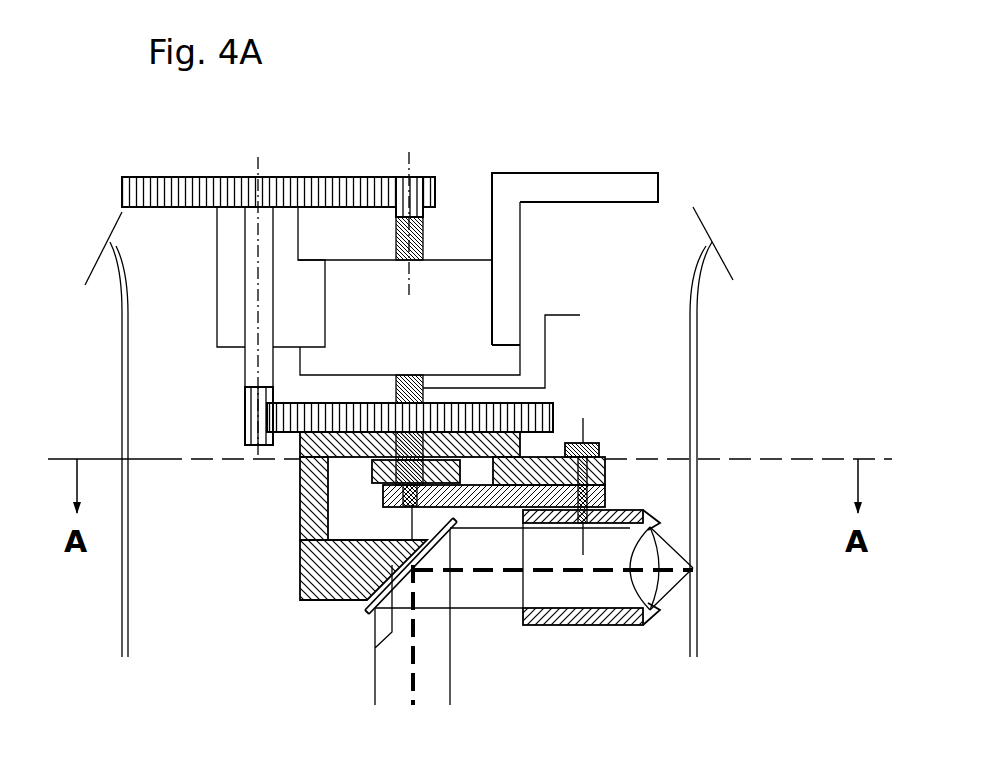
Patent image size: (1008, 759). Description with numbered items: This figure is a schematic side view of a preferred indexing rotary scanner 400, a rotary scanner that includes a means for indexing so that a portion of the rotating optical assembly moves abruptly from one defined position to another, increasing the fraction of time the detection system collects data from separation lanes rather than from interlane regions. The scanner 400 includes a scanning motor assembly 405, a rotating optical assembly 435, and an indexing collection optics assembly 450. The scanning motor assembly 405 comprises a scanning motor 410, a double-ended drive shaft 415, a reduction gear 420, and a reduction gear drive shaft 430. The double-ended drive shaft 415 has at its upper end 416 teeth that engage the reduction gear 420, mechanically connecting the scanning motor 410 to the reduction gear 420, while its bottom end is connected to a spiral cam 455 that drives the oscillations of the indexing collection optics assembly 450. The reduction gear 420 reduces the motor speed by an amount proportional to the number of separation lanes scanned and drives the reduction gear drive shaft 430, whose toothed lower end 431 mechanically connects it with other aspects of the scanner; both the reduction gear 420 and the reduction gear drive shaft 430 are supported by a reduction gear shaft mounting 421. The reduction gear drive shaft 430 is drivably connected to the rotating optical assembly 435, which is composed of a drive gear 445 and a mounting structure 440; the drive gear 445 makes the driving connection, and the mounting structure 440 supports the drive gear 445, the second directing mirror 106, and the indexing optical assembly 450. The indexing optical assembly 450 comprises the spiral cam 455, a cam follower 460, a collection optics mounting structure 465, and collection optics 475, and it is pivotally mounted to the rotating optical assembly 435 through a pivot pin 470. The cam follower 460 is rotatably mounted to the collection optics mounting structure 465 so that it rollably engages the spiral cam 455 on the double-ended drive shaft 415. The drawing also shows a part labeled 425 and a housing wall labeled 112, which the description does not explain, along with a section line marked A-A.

The indexing rotary scanner 400 is at (745, 242).
The scanning motor assembly 405 is at (187, 328).
The scanning motor 410 is at (459, 258).
The double-ended drive shaft 415 is at (519, 347).
The upper end of double-ended drive shaft 416 is at (412, 176).
The reduction gear 420 is at (122, 190).
The reduction gear shaft mounting 421 is at (217, 273).
The bracket 425 is at (660, 185).
The reduction gear drive shaft 430 is at (245, 377).
The lower end of reduction gear drive shaft 431 is at (245, 426).
The rotating optical assembly 435 is at (282, 513).
The mounting structure 440 is at (300, 598).
The drive gear 445 is at (557, 408).
The indexing collection optics assembly 450 is at (623, 495).
The spiral cam 455 is at (372, 471).
The cam follower 460 is at (385, 487).
The collection optics mounting structure 465 is at (490, 505).
The pivot pin 470 is at (587, 445).
The collection optics 475 is at (633, 553).
The second directing mirror 106 is at (375, 647).
The housing wall 112 is at (697, 321).